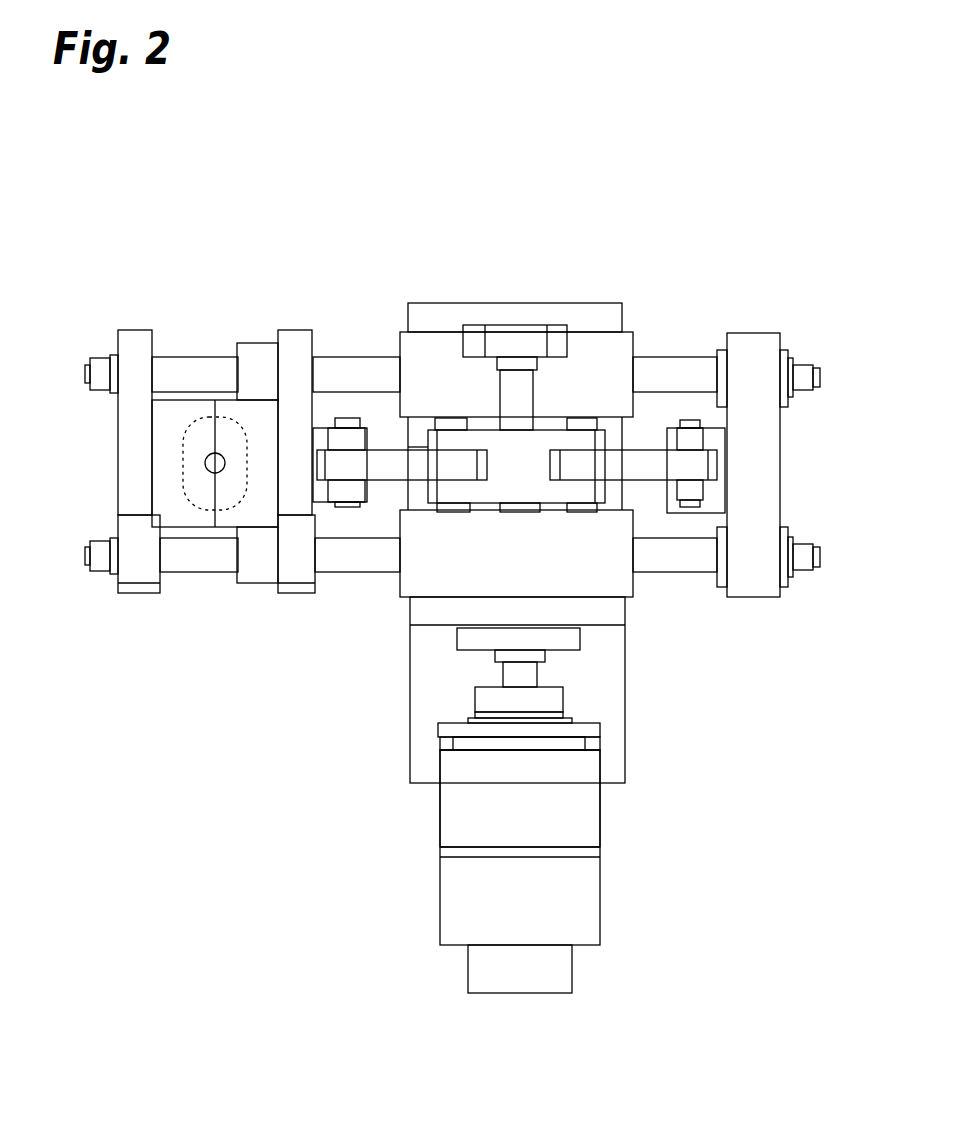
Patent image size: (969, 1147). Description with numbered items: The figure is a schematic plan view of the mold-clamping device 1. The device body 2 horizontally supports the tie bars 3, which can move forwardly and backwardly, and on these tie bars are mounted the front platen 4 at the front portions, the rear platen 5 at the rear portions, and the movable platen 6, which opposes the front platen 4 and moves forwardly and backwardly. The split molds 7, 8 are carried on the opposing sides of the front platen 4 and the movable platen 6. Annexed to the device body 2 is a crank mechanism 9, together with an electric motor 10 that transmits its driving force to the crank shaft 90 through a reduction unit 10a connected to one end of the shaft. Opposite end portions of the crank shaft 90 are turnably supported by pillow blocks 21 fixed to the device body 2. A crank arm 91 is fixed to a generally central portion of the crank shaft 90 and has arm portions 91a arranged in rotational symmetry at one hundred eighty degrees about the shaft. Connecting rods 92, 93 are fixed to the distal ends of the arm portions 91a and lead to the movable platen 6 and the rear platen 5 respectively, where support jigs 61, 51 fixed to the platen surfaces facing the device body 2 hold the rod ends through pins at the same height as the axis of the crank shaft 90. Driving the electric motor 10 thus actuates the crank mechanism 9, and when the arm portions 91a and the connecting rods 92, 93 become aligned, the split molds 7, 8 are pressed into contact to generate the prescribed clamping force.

The mold-clamping device 1 is at (482, 233).
The device body 2 is at (610, 350).
The tie bars 3 is at (207, 352).
The front platen 4 is at (130, 330).
The rear platen 5 is at (757, 348).
The movable platen 6 is at (298, 370).
The split mold 7 is at (165, 497).
The split mold 8 is at (258, 502).
The crank mechanism 9 is at (485, 505).
The electric motor 10 is at (562, 892).
The reduction unit 10a is at (530, 787).
The pillow blocks 21 is at (498, 342).
The support jig 51 is at (693, 432).
The support jig 61 is at (312, 420).
The crank shaft 90 is at (522, 677).
The crank arm 91 is at (543, 445).
The arm portions 91a is at (580, 440).
The connecting rod 92 is at (378, 462).
The connecting rod 93 is at (635, 467).